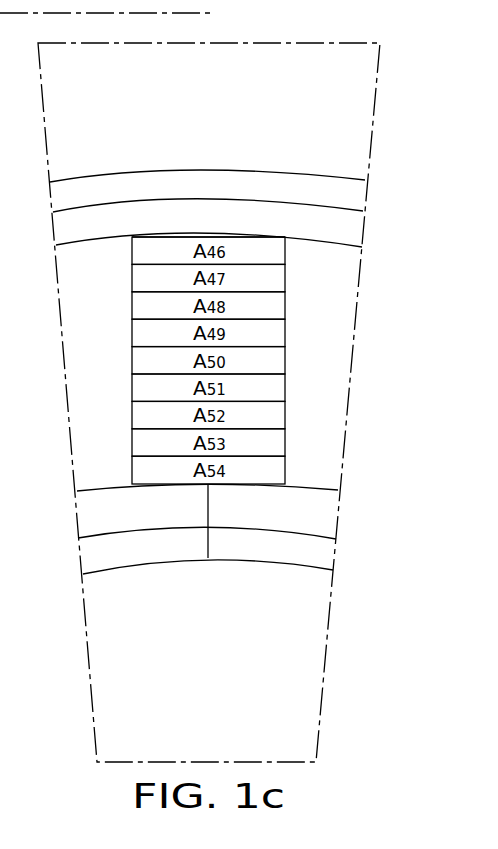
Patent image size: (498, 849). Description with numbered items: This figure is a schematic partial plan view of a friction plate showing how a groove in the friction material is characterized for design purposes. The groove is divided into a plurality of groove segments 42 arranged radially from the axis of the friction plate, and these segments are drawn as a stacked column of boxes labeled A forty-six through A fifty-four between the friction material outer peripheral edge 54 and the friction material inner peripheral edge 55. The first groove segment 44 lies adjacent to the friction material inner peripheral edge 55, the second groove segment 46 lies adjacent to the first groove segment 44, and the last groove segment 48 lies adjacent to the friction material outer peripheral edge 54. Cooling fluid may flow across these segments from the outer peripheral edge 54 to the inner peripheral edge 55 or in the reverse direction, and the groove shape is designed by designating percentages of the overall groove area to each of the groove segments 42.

The groove segments 42 is at (286, 304).
The first groove segment 44 is at (286, 471).
The second groove segment 46 is at (286, 439).
The last groove segment 48 is at (286, 252).
The friction material outer peripheral edge 54 is at (271, 237).
The friction material inner peripheral edge 55 is at (271, 484).